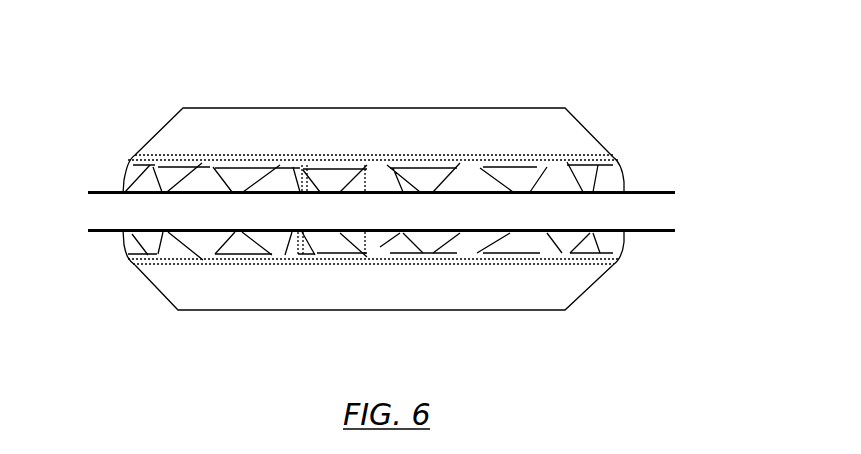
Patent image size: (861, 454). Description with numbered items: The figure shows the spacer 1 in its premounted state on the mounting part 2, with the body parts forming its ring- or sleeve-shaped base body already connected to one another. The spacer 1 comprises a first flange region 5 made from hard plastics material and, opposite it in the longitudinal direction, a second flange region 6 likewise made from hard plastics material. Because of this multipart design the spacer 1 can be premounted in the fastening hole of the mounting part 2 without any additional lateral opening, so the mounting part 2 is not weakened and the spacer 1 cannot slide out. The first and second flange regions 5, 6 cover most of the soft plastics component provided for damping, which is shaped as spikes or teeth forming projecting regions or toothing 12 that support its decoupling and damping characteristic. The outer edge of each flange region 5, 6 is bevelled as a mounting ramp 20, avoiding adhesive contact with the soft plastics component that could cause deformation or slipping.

The spacer 1 is at (229, 50).
The mounting part 2 is at (115, 207).
The first flange region 5 is at (470, 108).
The second flange region 6 is at (430, 317).
The projecting regions/toothing 12 is at (523, 180).
The mounting ramp 20 is at (590, 130).